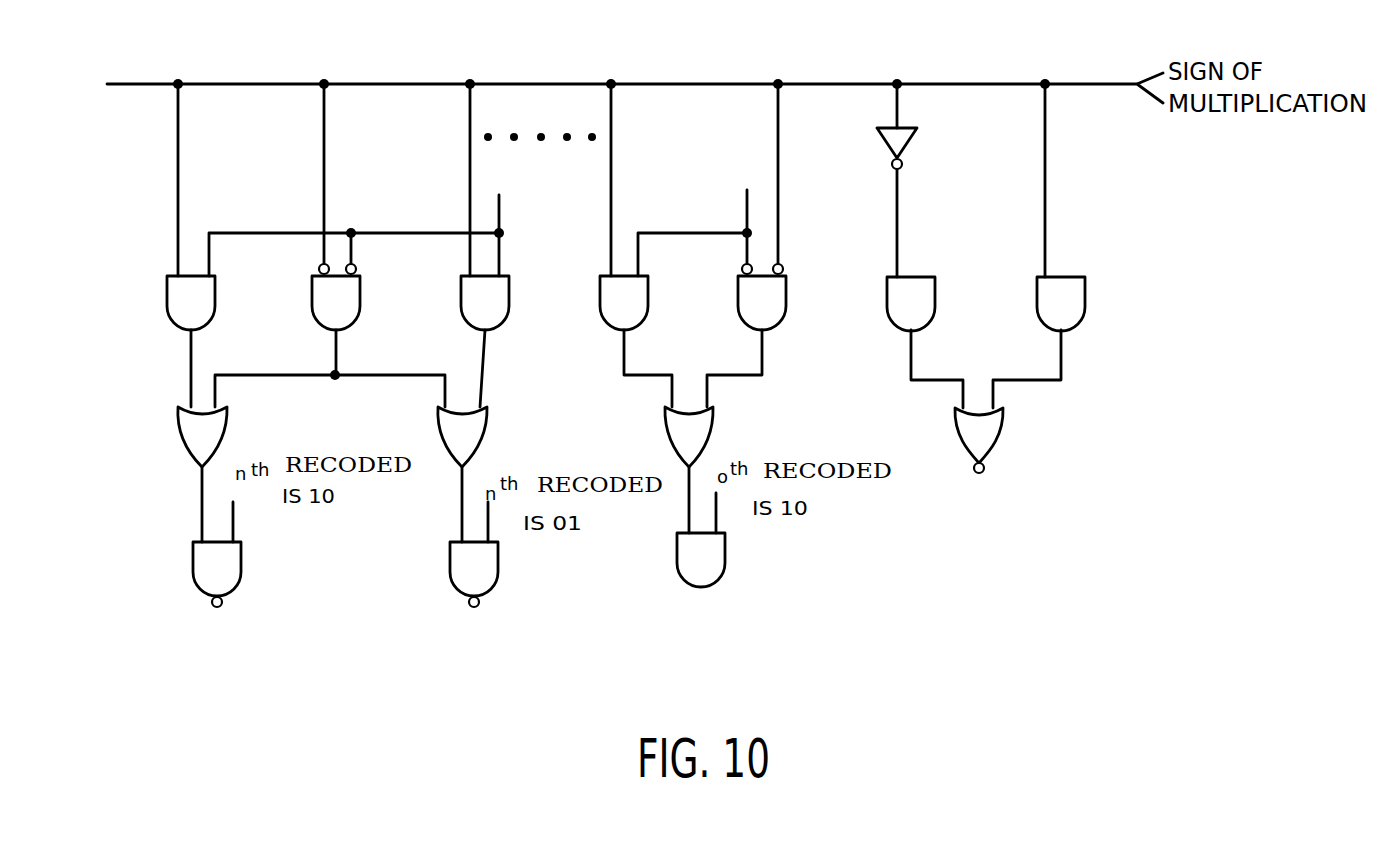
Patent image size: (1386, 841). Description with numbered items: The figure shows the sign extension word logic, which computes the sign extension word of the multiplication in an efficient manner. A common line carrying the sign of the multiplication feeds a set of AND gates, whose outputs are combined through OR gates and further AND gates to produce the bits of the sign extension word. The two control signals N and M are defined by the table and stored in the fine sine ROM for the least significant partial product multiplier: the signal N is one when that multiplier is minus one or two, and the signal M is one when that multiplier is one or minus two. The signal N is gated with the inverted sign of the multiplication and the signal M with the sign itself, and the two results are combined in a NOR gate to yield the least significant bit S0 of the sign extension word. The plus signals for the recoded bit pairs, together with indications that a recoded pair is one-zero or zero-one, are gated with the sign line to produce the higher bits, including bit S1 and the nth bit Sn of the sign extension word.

The N signal N is at (923, 277).
The M signal M is at (1077, 277).
The sign extension word bit 0 S0 is at (979, 473).
The sign extension word bit 1 S1 is at (701, 587).
The sign extension word nth bit Sn is at (474, 607).